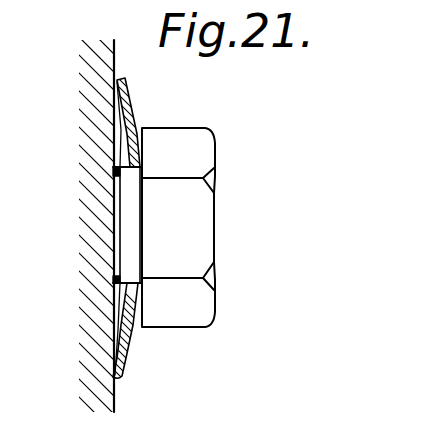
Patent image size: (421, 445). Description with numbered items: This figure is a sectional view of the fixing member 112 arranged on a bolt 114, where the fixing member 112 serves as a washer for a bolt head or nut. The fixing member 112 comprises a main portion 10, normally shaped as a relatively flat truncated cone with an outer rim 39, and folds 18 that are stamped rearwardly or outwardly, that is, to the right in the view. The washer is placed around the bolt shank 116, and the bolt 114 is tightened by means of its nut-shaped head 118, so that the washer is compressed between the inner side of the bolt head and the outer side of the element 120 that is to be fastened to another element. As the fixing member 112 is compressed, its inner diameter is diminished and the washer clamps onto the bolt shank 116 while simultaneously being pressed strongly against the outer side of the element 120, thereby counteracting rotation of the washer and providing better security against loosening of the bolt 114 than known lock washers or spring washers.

The main portion 10 is at (130, 354).
The folds 18 is at (139, 329).
The outer rim 39 is at (116, 386).
The fixing member 112 is at (136, 104).
The bolt 114 is at (215, 143).
The bolt shank 116 is at (130, 213).
The nut-shaped head 118 is at (190, 242).
The element 120 is at (107, 129).